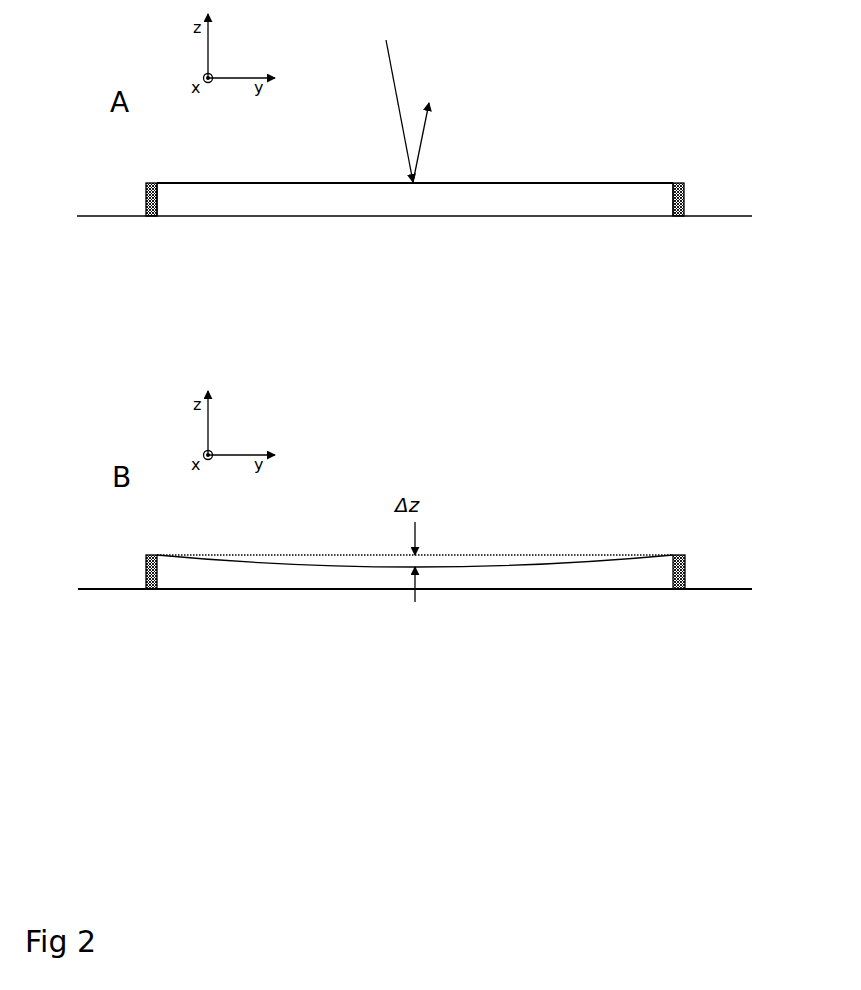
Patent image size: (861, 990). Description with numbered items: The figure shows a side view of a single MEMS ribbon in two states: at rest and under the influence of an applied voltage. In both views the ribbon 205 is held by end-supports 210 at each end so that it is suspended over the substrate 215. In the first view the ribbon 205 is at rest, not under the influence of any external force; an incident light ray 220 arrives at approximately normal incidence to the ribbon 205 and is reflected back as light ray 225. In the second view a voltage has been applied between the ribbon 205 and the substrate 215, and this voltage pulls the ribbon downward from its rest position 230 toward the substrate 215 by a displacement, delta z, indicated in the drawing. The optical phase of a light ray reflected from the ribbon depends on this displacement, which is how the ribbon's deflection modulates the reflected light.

In FIG. 2A, the ribbon 205 is at (535, 179).
In FIG. 2B, the ribbon 205 is at (532, 563).
In FIG. 2A, the end-supports 210 is at (143, 193).
In FIG. 2B, the end-supports 210 is at (683, 565).
In FIG. 2A, the substrate 215 is at (487, 218).
In FIG. 2B, the substrate 215 is at (738, 588).
In FIG. 2A, the light ray 220 is at (392, 63).
In FIG. 2A, the light ray 225 is at (428, 133).
In FIG. 2B, the rest position 230 is at (310, 555).